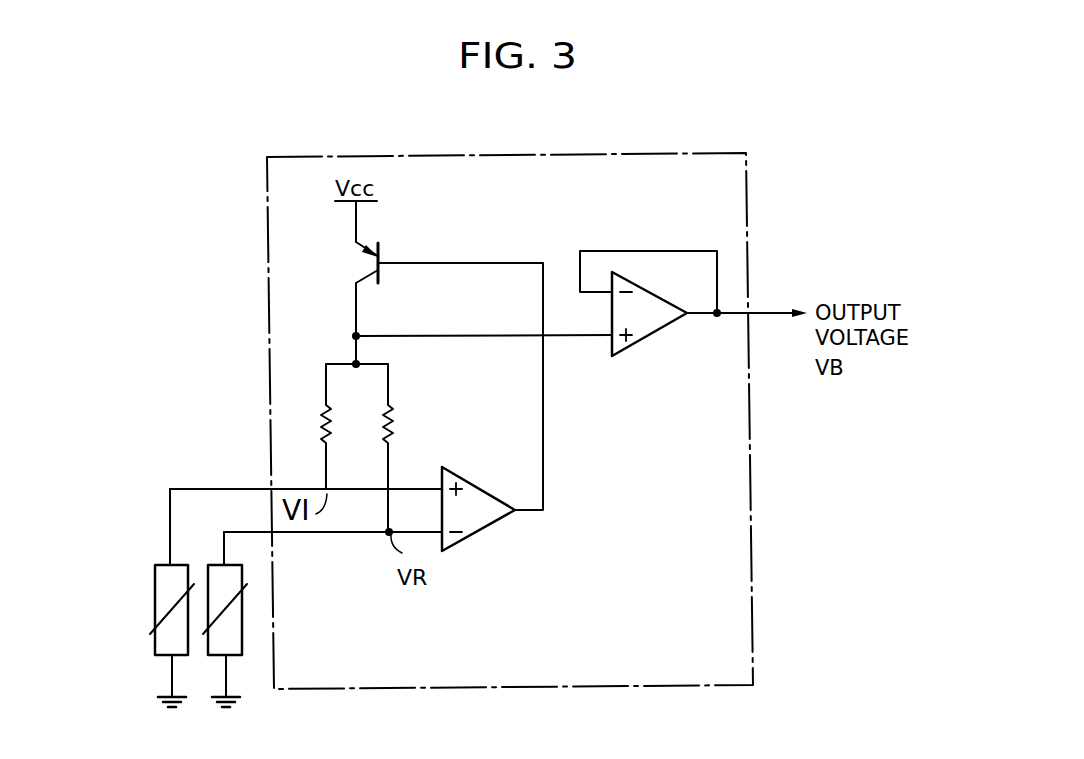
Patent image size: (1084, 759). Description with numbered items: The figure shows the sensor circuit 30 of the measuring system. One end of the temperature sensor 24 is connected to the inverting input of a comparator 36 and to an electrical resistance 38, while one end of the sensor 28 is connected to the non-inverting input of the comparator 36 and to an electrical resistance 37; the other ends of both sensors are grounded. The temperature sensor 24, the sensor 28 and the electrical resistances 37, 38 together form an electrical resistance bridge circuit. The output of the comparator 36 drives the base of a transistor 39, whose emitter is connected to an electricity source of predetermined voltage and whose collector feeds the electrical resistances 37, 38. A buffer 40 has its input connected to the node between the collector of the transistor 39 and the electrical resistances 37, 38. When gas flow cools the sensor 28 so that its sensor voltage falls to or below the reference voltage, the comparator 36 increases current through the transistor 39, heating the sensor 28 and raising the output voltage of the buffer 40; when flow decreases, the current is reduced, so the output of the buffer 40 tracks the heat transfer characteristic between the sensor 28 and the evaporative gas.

The sensor circuit 30 is at (643, 150).
The transistor 39 is at (380, 246).
The electrical resistance 37 is at (321, 432).
The electrical resistance 38 is at (395, 425).
The comparator 36 is at (463, 471).
The buffer 40 is at (658, 336).
The sensor 28 is at (155, 594).
The temperature sensor 24 is at (245, 620).